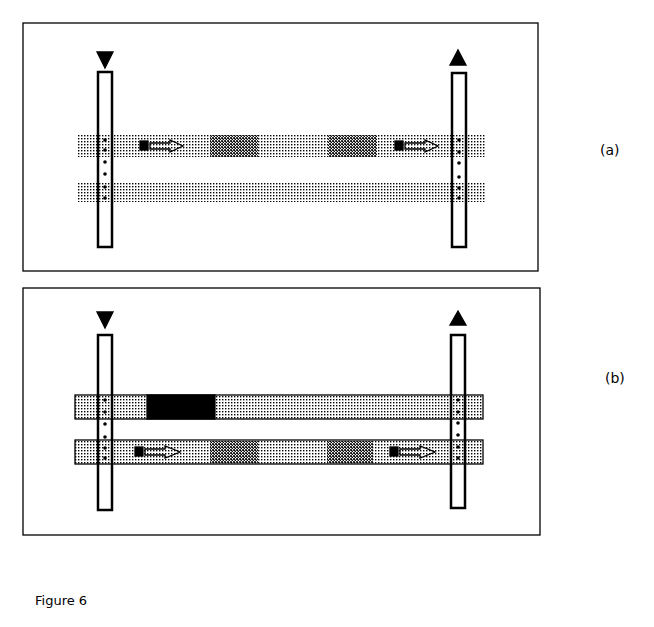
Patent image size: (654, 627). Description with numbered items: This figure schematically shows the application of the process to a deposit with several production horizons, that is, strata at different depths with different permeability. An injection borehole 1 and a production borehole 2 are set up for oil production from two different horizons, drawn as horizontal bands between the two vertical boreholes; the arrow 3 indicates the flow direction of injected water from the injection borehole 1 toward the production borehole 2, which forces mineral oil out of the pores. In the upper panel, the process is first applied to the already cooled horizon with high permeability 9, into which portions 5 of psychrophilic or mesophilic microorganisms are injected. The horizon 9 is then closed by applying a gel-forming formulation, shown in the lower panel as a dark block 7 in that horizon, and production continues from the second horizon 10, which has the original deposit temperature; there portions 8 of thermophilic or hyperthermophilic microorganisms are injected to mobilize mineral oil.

The injection borehole 1 is at (97, 103).
The production borehole 2 is at (466, 108).
The arrow 3 is at (158, 140).
The portions of microorganisms 5 is at (232, 137).
The hot region 7 is at (177, 394).
The portions of microorganisms 8 is at (247, 464).
The horizon with high permeability 9 is at (486, 145).
The second horizon 10 is at (486, 192).